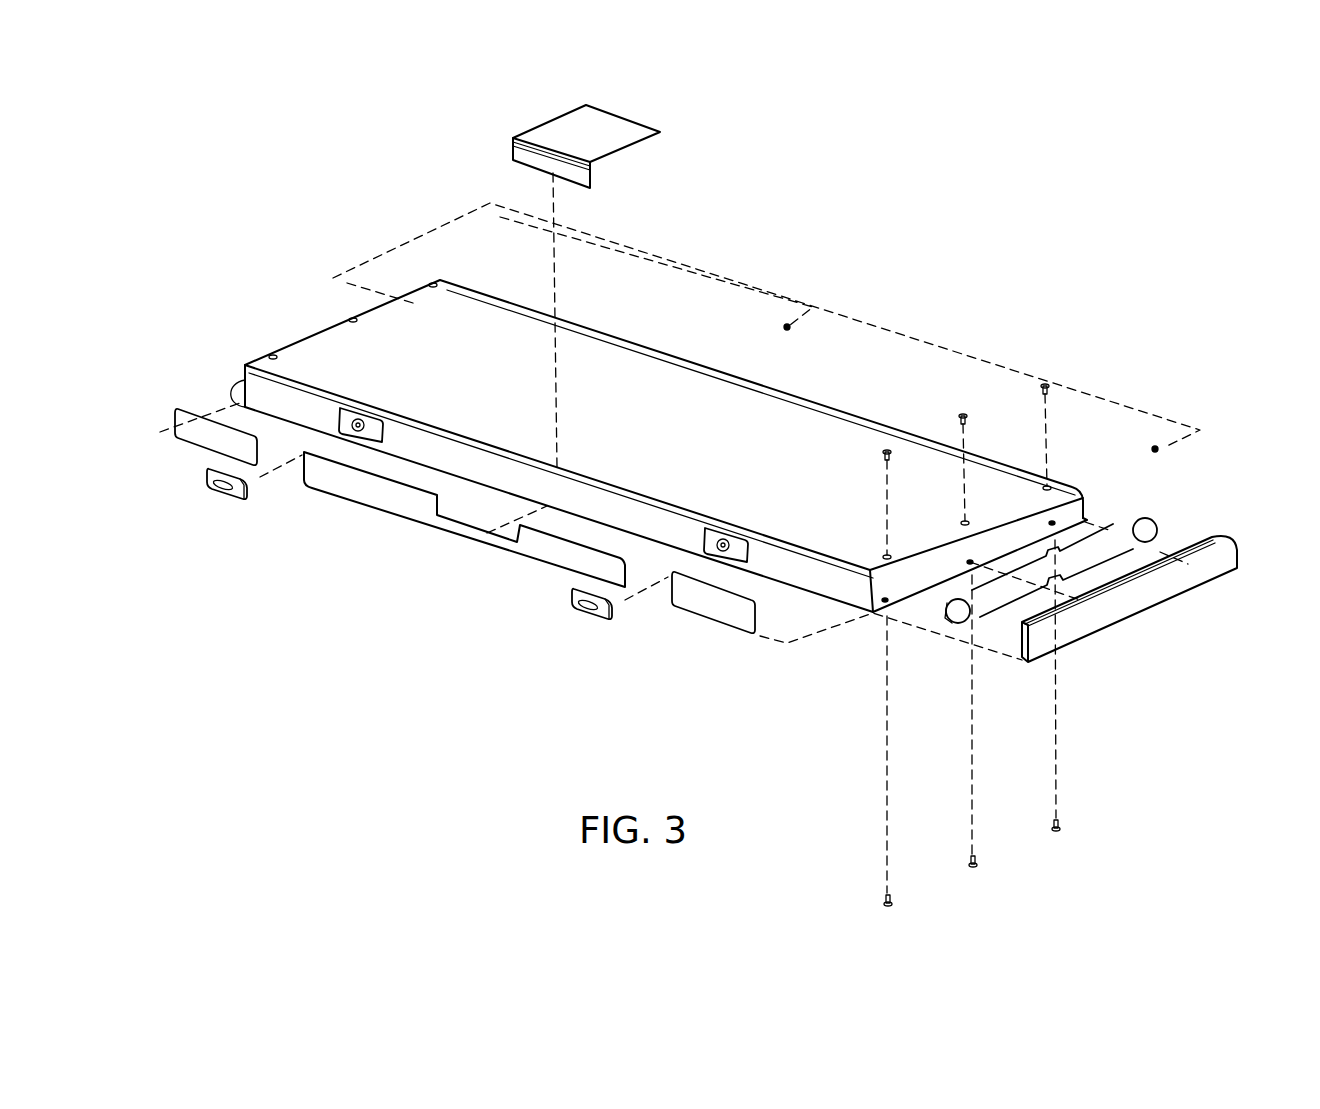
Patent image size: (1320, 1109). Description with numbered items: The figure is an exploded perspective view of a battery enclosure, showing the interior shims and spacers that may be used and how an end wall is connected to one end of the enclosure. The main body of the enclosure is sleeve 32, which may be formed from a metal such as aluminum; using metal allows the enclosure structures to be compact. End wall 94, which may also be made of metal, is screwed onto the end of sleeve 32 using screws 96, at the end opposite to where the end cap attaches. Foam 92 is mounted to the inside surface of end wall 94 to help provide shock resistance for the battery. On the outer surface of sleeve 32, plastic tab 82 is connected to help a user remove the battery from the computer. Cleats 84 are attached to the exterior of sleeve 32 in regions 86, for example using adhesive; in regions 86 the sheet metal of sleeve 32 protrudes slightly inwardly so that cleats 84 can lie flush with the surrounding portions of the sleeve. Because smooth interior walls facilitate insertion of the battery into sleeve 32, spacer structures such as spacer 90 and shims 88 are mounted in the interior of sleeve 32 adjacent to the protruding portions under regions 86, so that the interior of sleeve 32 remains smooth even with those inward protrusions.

The sleeve 32 is at (598, 352).
The plastic tab 82 is at (598, 125).
The cleats 84 is at (238, 498).
The regions 86 is at (360, 410).
The shims 88 is at (187, 440).
The spacer 90 is at (377, 500).
The foam 92 is at (1147, 522).
The end wall 94 is at (1223, 563).
The screws 96 is at (887, 448).